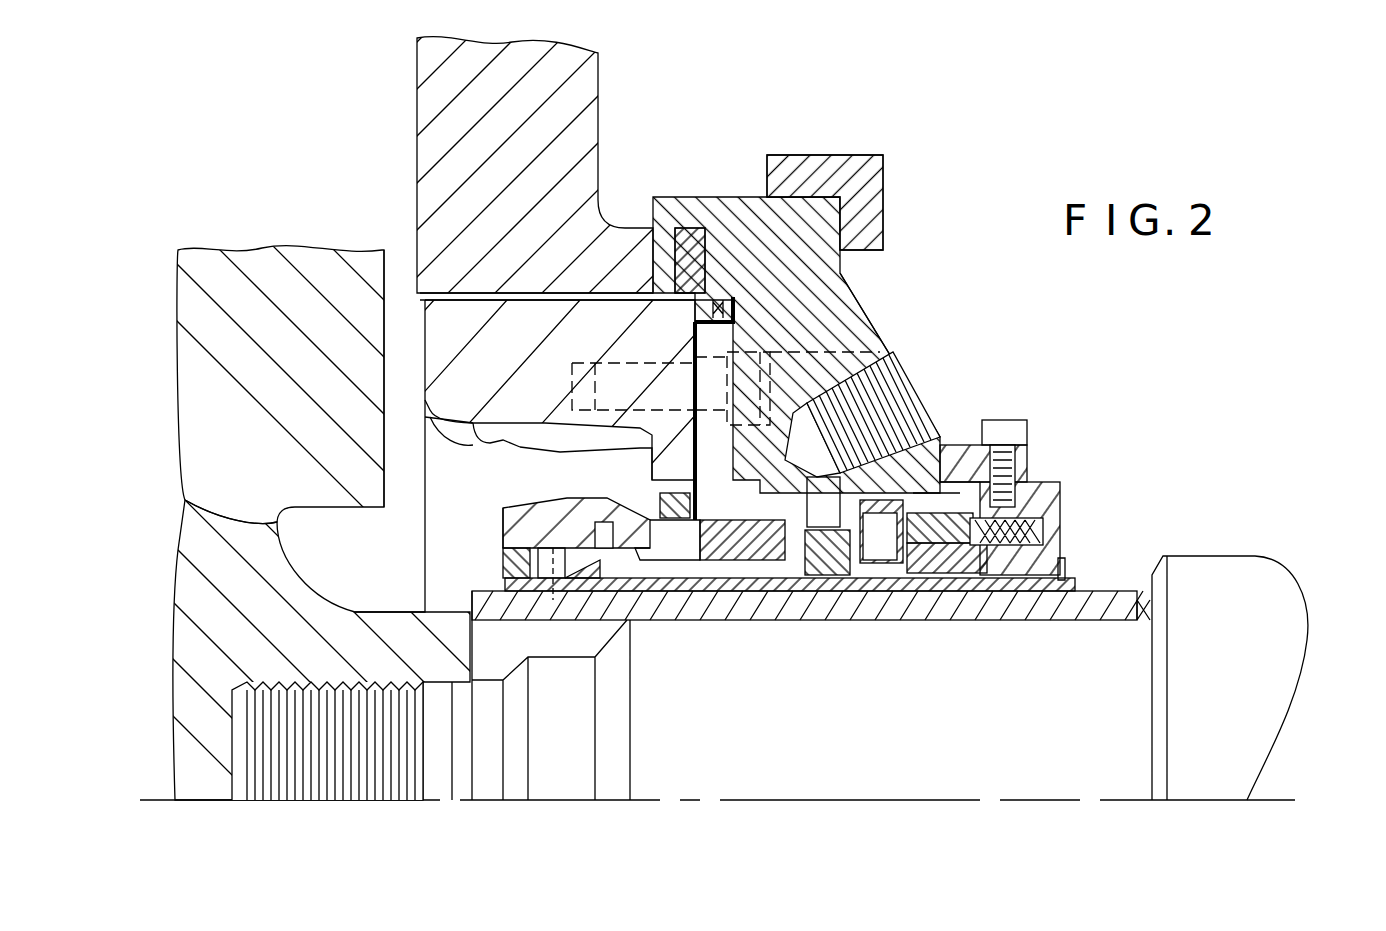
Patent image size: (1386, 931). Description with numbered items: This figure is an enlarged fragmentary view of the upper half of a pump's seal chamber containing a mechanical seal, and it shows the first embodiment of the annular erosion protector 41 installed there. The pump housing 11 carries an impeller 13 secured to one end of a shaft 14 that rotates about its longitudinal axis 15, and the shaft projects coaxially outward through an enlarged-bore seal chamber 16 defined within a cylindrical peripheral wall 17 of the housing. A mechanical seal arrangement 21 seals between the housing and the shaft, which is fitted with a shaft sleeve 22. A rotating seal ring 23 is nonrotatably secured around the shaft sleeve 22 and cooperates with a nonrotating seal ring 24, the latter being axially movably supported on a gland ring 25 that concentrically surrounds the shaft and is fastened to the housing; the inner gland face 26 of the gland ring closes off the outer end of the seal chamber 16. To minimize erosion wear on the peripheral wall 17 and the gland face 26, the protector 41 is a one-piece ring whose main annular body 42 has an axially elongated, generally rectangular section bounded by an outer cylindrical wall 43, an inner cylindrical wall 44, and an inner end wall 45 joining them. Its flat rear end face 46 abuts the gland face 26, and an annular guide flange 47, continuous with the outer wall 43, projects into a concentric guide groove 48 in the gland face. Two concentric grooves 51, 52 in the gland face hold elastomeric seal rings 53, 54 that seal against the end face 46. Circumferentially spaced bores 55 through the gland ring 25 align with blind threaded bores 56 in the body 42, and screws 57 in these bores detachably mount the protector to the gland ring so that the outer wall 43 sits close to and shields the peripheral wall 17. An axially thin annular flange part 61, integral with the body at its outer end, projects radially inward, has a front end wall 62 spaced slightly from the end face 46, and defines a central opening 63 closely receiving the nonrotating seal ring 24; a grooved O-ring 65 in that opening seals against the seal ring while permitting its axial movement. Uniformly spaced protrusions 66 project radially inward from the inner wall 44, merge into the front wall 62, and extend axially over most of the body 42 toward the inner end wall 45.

The pump housing 11 is at (432, 92).
The impeller 13 is at (220, 262).
The shaft 14 is at (1278, 670).
The axis 15 is at (1096, 800).
The enlarged-bore seal chamber 16 is at (185, 500).
The cylindrical peripheral wall 17 is at (426, 318).
The mechanical seal arrangement 21 is at (1052, 452).
The shaft sleeve 22 is at (868, 605).
The rotating seal ring 23 is at (495, 530).
The nonrotating seal ring 24 is at (650, 492).
The gland ring 25 is at (800, 312).
The inner gland face 26 is at (668, 370).
The annular erosion protector 41 is at (412, 419).
The main annular body 42 is at (470, 357).
The outer cylindrical wall 43 is at (500, 295).
The inner cylindrical wall 44 is at (500, 440).
The inner end wall 45 is at (460, 374).
The rear end face 46 is at (760, 338).
The annular guide flange 47 is at (842, 273).
The annular guide groove 48 is at (735, 296).
The annular groove 51 is at (815, 295).
The annular groove 52 is at (790, 562).
The elastomeric seal ring 53 is at (722, 340).
The elastomeric seal ring 54 is at (752, 562).
The bores 55 is at (905, 372).
The blind threaded bores 56 is at (573, 355).
The screws 57 is at (805, 372).
The annular flange part 61 is at (668, 468).
The front end wall 62 is at (520, 445).
The central opening 63 is at (705, 558).
The annular elastomeric seal ring 65 is at (636, 556).
The protrusions 66 is at (508, 522).